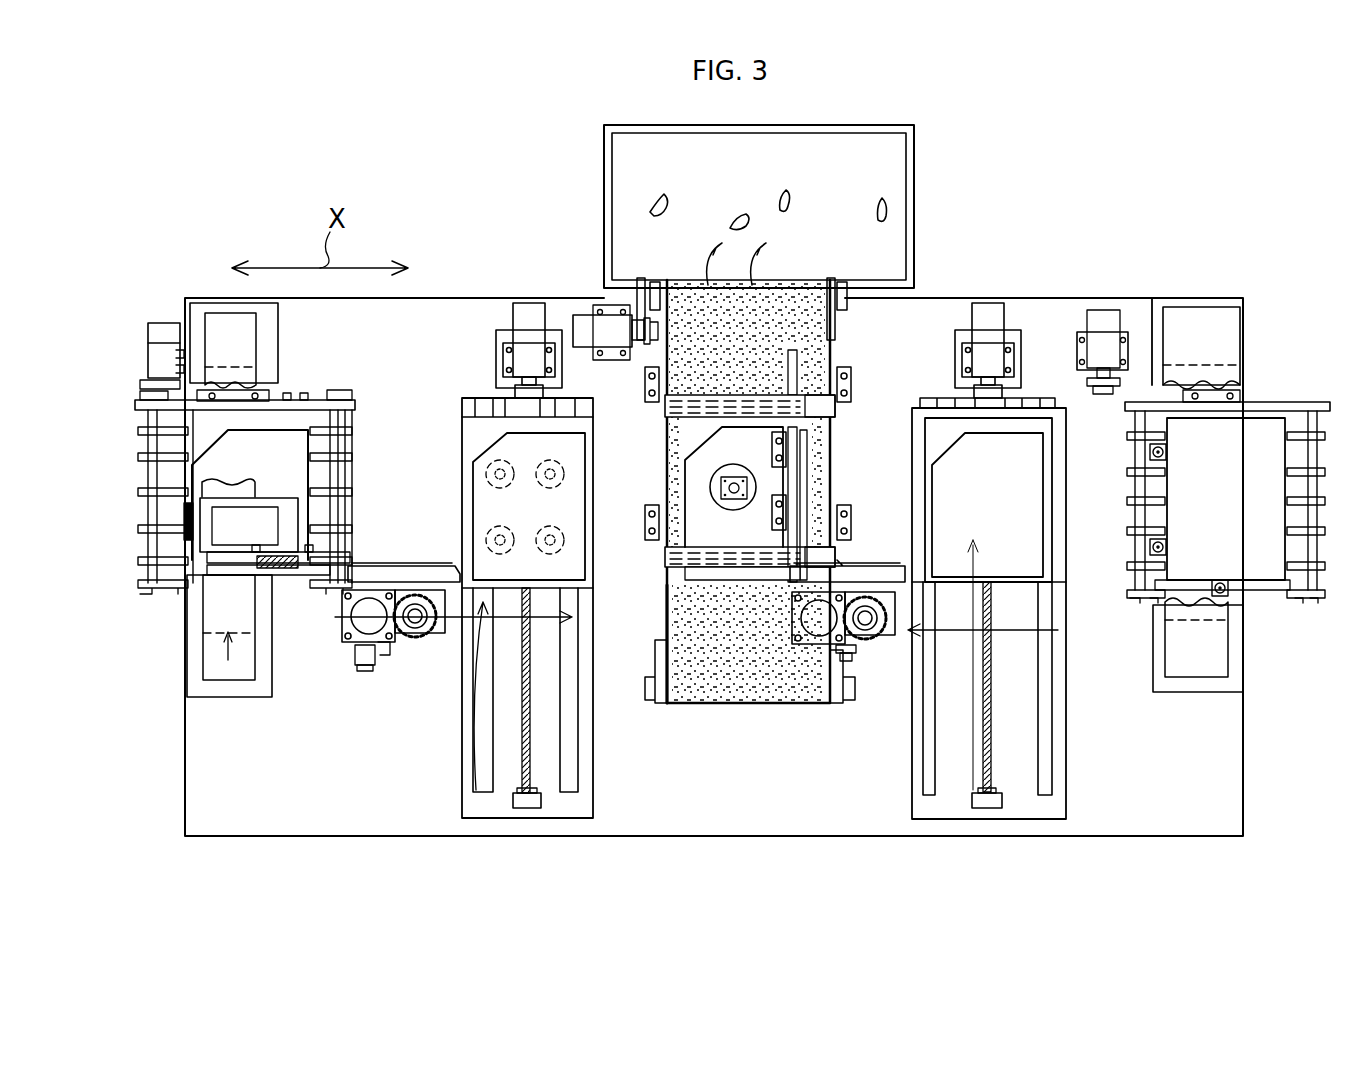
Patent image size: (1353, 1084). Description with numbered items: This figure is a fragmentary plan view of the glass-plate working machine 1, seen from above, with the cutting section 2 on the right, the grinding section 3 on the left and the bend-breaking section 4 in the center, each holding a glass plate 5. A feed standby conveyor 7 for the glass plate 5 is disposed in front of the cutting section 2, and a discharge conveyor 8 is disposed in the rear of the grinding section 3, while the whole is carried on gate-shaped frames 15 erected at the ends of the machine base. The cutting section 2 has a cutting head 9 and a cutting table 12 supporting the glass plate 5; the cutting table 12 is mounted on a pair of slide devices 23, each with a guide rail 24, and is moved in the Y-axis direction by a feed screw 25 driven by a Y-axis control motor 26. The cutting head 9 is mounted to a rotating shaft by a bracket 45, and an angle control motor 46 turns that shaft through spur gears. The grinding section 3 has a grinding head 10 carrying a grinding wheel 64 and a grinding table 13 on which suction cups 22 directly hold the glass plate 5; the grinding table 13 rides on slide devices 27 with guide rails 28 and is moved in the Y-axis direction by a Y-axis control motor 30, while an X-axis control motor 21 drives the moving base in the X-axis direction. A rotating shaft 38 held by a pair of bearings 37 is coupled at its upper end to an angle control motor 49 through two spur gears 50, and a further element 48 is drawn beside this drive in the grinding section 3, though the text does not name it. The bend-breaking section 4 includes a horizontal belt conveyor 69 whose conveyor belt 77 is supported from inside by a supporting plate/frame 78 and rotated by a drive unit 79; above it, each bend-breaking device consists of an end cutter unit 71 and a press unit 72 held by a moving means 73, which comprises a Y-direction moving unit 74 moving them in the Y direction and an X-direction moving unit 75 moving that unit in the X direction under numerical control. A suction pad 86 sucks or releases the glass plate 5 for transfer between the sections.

The glass-plate working machine 1 is at (1130, 286).
The cutting section 2 is at (994, 566).
The grinding section 3 is at (496, 562).
The bend-breaking section 4 is at (748, 582).
The glass plate 5 is at (700, 470).
The feed standby conveyor 7 is at (1296, 594).
The discharge conveyor 8 is at (224, 475).
The cutting head 9 is at (846, 656).
The grinding head 10 is at (402, 568).
The cutting table 12 is at (1058, 490).
The grinding table 13 is at (470, 444).
The gate-shaped frames 15 is at (228, 660).
The X-axis control motor 21 is at (250, 570).
The suction cups 22 is at (226, 511).
The slide devices 23 is at (545, 460).
The guide rail 24 is at (943, 752).
The feed screw 25 is at (987, 740).
The Y-axis control motor 26 is at (975, 352).
The slide devices 27 is at (566, 646).
The guide rail 28 is at (570, 760).
The Y-axis control motor 30 is at (523, 328).
The bearings 37 is at (860, 620).
The rotating shaft 38 is at (414, 619).
The bracket 45 is at (854, 673).
The angle control motor 46 is at (878, 628).
The drive motor 48 is at (365, 620).
The angle control motor 49 is at (427, 617).
The spur gears 50 is at (376, 655).
The grinding wheel 64 is at (406, 629).
The belt conveyor 69 is at (716, 652).
The end cutter unit 71 is at (780, 491).
The press unit 72 is at (780, 523).
The moving means 73 is at (838, 398).
The Y-direction moving unit 74 is at (790, 450).
The X-direction moving unit 75 is at (738, 406).
The conveyor belt 77 is at (735, 320).
The supporting plate/frame 78 is at (664, 627).
The drive unit 79 is at (611, 332).
The suction pad 86 is at (730, 501).